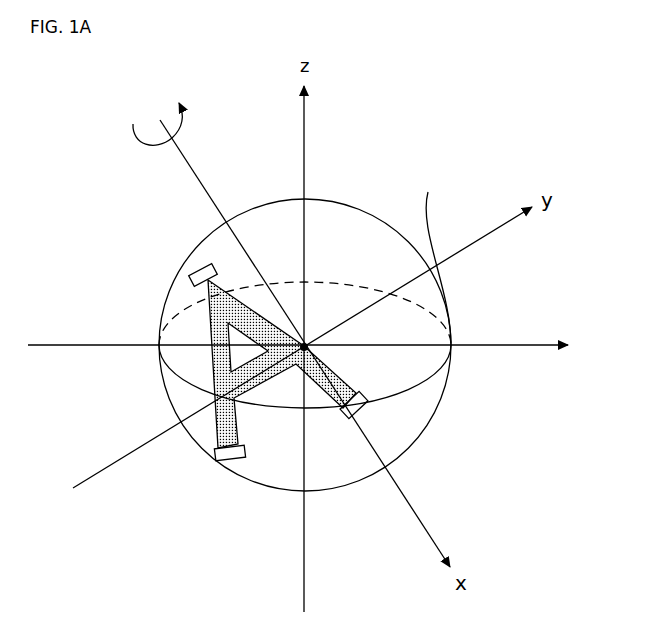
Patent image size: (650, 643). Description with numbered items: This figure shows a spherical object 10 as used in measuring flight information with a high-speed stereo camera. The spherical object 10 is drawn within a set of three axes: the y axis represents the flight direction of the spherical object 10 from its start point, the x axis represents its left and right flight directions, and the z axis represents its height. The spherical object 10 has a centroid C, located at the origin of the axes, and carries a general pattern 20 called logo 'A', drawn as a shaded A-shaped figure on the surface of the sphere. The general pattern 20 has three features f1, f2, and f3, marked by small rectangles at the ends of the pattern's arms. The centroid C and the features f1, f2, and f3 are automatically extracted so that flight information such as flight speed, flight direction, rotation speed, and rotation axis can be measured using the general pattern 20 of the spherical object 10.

The spherical object 10 is at (384, 146).
The general pattern 20 is at (213, 363).
The feature f1 is at (200, 268).
The feature f2 is at (232, 459).
The feature f3 is at (364, 408).
The centroid C is at (437, 255).